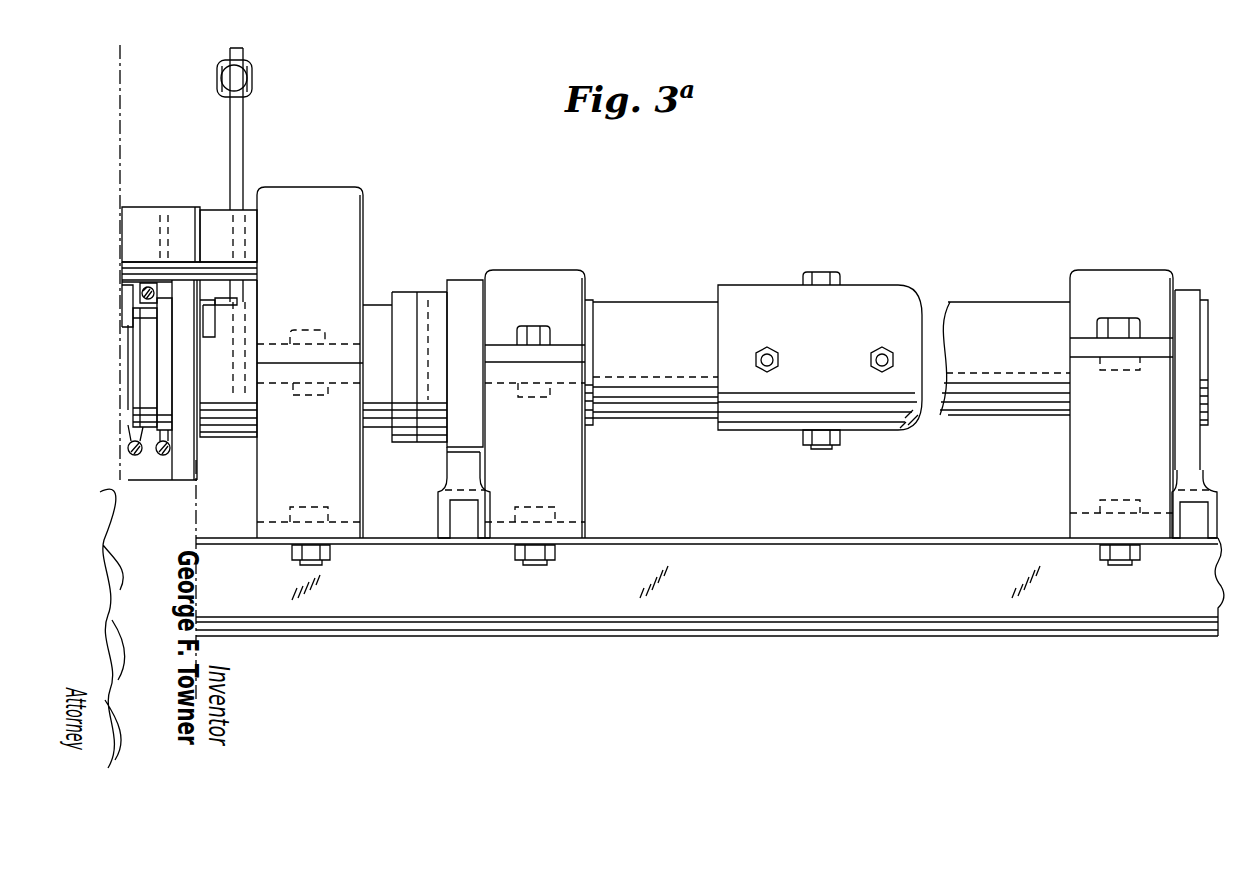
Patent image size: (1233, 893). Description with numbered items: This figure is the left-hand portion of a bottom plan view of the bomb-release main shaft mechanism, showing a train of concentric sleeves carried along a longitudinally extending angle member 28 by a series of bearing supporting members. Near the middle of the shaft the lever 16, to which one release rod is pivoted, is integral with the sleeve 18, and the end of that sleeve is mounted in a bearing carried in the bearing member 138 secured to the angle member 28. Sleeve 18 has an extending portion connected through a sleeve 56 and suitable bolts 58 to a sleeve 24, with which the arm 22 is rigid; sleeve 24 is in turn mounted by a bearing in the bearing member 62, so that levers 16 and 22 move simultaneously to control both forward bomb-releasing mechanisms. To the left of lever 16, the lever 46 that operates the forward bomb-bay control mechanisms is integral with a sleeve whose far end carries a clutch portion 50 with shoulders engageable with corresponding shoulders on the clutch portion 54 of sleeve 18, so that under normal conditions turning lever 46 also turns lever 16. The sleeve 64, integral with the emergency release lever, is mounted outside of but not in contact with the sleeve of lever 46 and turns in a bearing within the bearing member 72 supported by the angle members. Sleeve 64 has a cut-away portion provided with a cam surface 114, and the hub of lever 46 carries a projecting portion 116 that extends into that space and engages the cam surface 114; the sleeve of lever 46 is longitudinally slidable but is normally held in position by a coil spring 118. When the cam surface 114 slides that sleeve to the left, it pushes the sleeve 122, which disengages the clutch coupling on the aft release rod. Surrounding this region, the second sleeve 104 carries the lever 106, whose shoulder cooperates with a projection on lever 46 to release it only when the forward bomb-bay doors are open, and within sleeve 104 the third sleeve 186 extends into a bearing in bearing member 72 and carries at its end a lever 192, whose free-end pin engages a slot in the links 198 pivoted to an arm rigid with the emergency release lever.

The lever 16 is at (443, 512).
The sleeve 18 is at (650, 318).
The arm 22 is at (1175, 542).
The sleeve 24 is at (1000, 318).
The angle member 28 is at (776, 558).
The lever 46 is at (168, 230).
The clutch portion 50 is at (402, 302).
The clutch portion 54 is at (433, 300).
The sleeve 56 is at (888, 300).
The bolts 58 is at (872, 353).
The bearing member 62 is at (1077, 462).
The sleeve 64 is at (248, 438).
The bearing member 72 is at (352, 495).
The second sleeve 104 is at (137, 223).
The lever 106 is at (188, 457).
The cam surface 114 is at (217, 333).
The projecting portion 116 is at (217, 310).
The coil spring 118 is at (140, 295).
The sleeve 122 is at (128, 355).
The bearing member 138 is at (577, 498).
The third sleeve 186 is at (243, 217).
The lever 192 is at (237, 145).
The links 198 is at (247, 67).